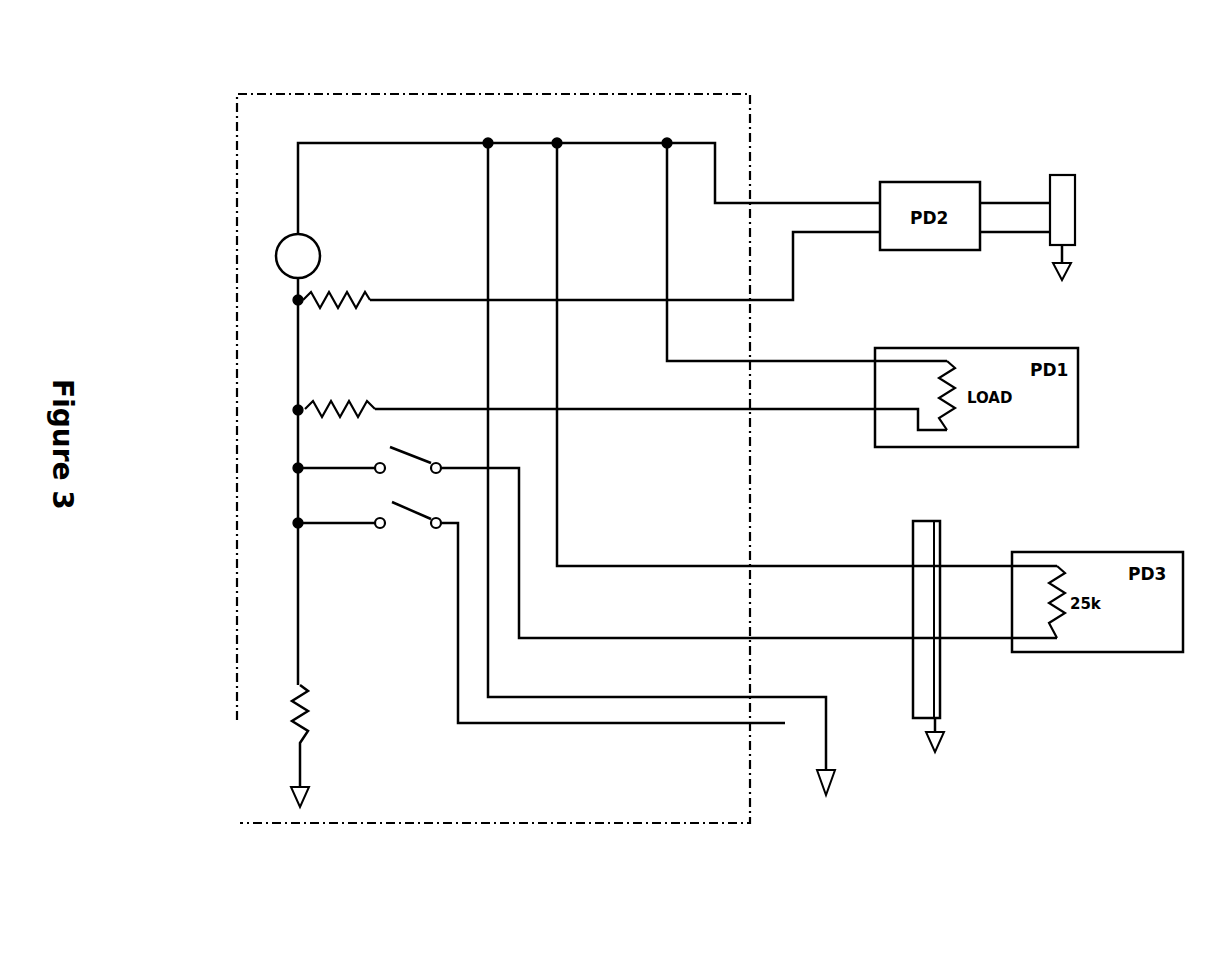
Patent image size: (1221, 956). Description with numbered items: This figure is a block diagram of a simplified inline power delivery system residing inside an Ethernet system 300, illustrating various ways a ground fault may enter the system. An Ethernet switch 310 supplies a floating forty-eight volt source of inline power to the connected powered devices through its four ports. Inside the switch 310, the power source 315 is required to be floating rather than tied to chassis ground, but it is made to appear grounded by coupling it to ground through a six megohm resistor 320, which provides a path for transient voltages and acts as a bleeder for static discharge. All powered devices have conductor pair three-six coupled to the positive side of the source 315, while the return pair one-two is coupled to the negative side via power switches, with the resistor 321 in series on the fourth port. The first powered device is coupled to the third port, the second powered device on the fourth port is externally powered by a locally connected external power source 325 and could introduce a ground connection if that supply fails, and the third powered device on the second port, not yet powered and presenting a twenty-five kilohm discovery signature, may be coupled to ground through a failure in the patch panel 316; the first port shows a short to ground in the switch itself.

The Ethernet system 300 is at (288, 82).
The Ethernet switch 310 is at (548, 93).
The 48 V power source 315 is at (258, 258).
The patch panel 316 is at (940, 521).
The 6 MΩ resistor 320 is at (298, 706).
The resistor RM2 321 is at (372, 298).
The external power source 325 is at (1065, 175).